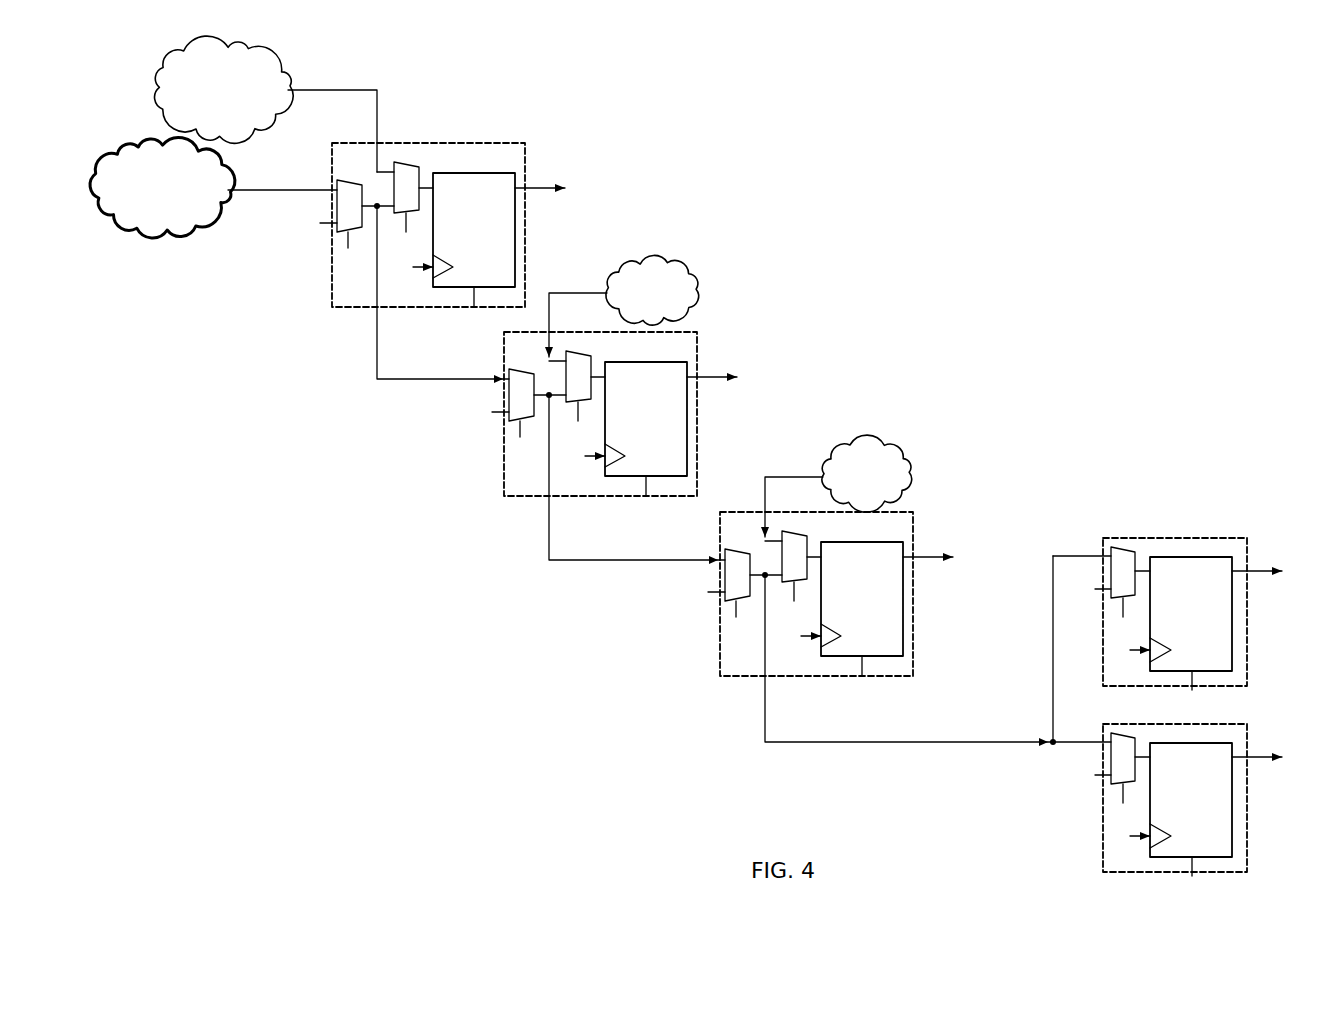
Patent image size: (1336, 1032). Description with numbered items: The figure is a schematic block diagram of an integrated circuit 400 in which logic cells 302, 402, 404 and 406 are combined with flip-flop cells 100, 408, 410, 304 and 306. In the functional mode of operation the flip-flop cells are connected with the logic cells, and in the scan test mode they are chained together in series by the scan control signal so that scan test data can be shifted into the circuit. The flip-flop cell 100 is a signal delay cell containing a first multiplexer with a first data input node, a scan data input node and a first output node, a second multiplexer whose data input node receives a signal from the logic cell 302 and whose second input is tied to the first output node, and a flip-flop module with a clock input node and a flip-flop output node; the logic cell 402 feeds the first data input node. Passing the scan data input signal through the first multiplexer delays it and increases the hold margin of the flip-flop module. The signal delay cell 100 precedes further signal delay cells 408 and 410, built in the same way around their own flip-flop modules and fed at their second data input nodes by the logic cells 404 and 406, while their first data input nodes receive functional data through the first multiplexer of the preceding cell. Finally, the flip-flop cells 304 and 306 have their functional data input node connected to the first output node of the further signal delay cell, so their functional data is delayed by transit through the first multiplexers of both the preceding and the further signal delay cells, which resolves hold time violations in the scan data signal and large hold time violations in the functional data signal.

The integrated circuit 400 is at (848, 209).
The logic cell 302 is at (205, 99).
The logic cell 402 is at (145, 196).
The logic cell 404 is at (635, 301).
The logic cell 406 is at (851, 483).
The signal delay cell 100 is at (525, 250).
The further signal delay cell 408 is at (697, 415).
The further signal delay cell 410 is at (913, 620).
The flip-flop cell 304 is at (1247, 638).
The flip-flop cell 306 is at (1247, 828).